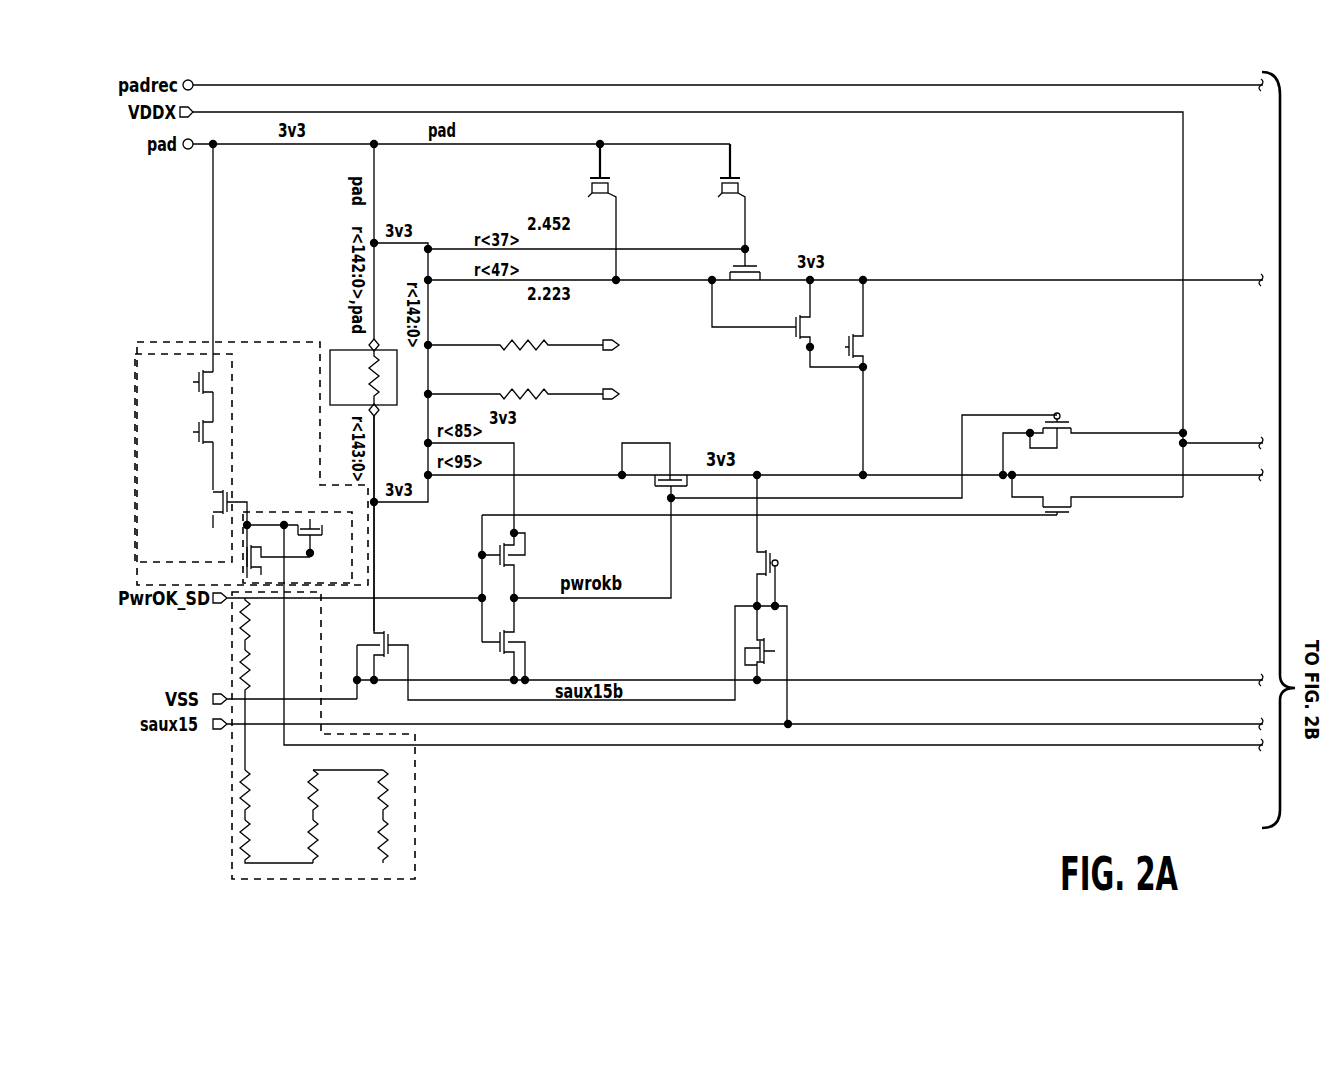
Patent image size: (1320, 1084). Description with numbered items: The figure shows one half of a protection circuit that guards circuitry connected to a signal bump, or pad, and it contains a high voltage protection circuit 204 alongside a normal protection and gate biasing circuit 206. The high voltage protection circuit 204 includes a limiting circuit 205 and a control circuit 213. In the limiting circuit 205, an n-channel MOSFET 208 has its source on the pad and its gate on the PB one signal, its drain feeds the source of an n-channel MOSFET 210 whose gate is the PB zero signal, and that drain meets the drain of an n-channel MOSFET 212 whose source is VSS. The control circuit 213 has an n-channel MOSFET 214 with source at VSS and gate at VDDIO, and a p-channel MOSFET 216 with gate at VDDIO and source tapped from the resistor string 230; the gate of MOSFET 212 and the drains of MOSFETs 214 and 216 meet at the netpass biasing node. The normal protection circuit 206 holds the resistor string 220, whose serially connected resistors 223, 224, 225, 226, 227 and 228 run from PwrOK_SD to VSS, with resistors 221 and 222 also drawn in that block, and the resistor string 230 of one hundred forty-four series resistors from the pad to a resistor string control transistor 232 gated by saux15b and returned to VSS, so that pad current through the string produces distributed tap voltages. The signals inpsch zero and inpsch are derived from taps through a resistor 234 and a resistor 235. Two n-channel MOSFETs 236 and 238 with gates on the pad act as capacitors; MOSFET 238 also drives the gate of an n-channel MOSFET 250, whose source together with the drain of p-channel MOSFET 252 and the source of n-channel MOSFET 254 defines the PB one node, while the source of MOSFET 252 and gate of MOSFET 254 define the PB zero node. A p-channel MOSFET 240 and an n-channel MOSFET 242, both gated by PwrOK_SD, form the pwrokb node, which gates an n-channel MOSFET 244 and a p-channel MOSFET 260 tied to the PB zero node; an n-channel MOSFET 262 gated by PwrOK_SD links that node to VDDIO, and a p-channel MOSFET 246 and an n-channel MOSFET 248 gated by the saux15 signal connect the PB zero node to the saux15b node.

The high voltage protection circuit 204 is at (178, 342).
The limiting circuit 205 is at (133, 366).
The normal protection and gate biasing circuit 206 is at (688, 304).
The n-channel MOSFET 208 is at (193, 380).
The n-channel MOSFET 210 is at (193, 430).
The n-channel MOSFET 212 is at (213, 520).
The control circuit 213 is at (352, 579).
The n-channel MOSFET 214 is at (245, 582).
The p-channel MOSFET 216 is at (330, 539).
The resistor string 220 is at (374, 880).
The resistor 221 is at (232, 613).
The resistor 222 is at (237, 660).
The resistor 223 is at (237, 790).
The resistor 224 is at (237, 838).
The resistor 225 is at (300, 795).
The resistor 226 is at (305, 845).
The resistor 227 is at (395, 788).
The resistor 228 is at (395, 842).
The resistor string 230 is at (340, 350).
The resistor string control transistor 232 is at (571, 570).
The resistor 234 is at (558, 333).
The resistor 235 is at (553, 382).
The n-channel MOSFET 236 is at (593, 212).
The n-channel MOSFET 238 is at (776, 196).
The p-channel MOSFET 240 is at (527, 564).
The n-channel MOSFET 242 is at (527, 641).
The n-channel MOSFET 244 is at (839, 456).
The p-channel MOSFET 246 is at (790, 542).
The n-channel MOSFET 248 is at (792, 645).
The n-channel MOSFET 250 is at (762, 274).
The p-channel MOSFET 252 is at (787, 323).
The n-channel MOSFET 254 is at (909, 377).
The p-channel MOSFET 260 is at (1133, 430).
The n-channel MOSFET 262 is at (1097, 508).